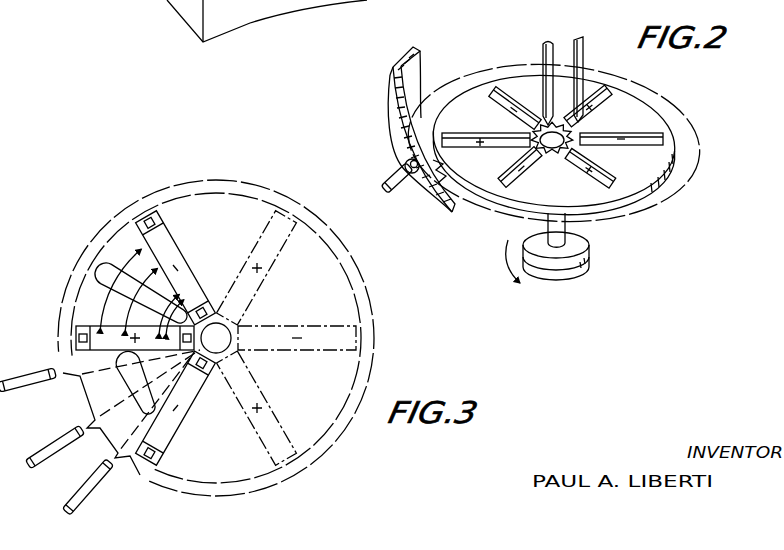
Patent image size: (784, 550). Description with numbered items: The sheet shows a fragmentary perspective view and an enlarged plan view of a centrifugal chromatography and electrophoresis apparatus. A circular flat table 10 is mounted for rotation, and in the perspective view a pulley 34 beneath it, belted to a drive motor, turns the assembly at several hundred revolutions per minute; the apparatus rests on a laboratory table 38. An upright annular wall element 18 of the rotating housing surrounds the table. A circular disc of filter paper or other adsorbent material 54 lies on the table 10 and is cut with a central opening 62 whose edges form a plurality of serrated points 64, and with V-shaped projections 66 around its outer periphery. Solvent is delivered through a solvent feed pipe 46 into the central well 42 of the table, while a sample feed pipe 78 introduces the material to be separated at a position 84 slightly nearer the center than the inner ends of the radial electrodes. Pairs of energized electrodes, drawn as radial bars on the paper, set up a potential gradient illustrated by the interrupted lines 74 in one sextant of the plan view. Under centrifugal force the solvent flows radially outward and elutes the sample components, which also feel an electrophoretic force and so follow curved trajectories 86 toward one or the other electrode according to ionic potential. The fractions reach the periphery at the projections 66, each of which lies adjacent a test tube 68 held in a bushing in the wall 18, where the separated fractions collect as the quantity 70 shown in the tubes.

In FIG. 2, the circular flat table 10 is at (620, 197).
In FIG. 2, the annular wall element 18 is at (402, 113).
In FIG. 2, the pulley 34 is at (573, 283).
In FIG. 2, the laboratory table 38 is at (168, 4).
In FIG. 2, the central well 42 is at (556, 148).
In FIG. 2, the solvent feed pipe 46 is at (546, 62).
In FIG. 2, the disc of filter paper or adsorbent material 54 is at (633, 112).
In FIG. 3, the disc of filter paper or adsorbent material 54 is at (287, 288).
In FIG. 2, the central opening 62 is at (570, 145).
In FIG. 2, the serrated edges or points 64 is at (543, 120).
In FIG. 2, the V-shaped projections 66 is at (437, 160).
In FIG. 3, the V-shaped projections 66 is at (72, 368).
In FIG. 2, the test tube 68 is at (388, 180).
In FIG. 3, the test tube 68 is at (27, 385).
In FIG. 3, the quantity 70 is at (73, 513).
In FIG. 3, the interrupted lines 74 is at (107, 272).
In FIG. 2, the sample feed pipe 78 is at (578, 57).
In FIG. 3, the sample introduction position 84 is at (218, 318).
In FIG. 3, the curved trajectories 86 is at (150, 410).